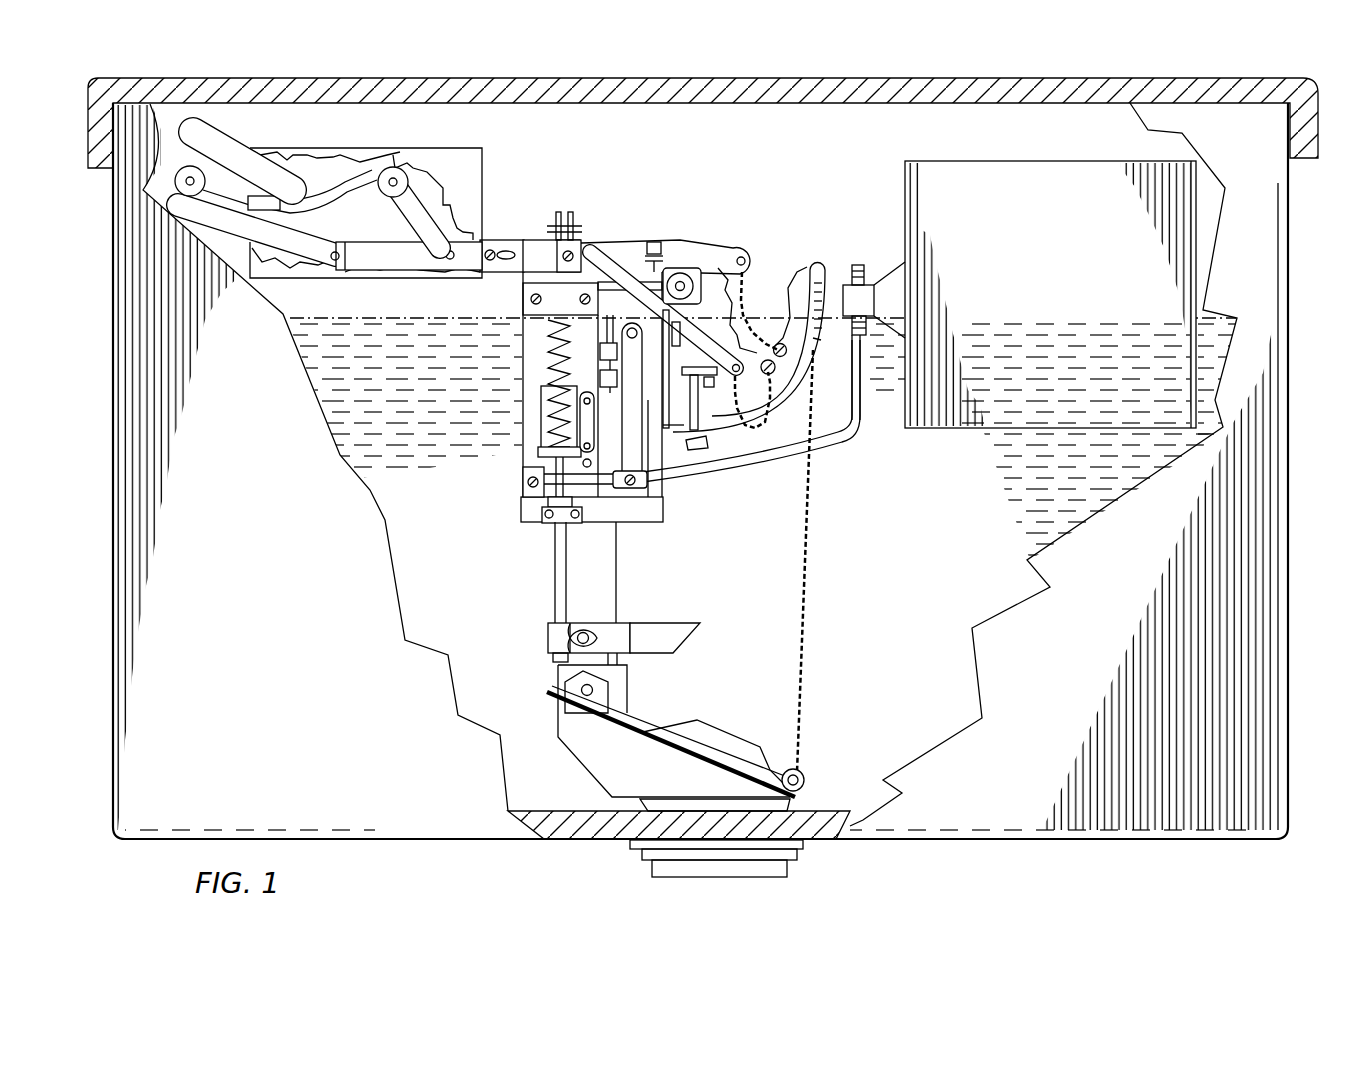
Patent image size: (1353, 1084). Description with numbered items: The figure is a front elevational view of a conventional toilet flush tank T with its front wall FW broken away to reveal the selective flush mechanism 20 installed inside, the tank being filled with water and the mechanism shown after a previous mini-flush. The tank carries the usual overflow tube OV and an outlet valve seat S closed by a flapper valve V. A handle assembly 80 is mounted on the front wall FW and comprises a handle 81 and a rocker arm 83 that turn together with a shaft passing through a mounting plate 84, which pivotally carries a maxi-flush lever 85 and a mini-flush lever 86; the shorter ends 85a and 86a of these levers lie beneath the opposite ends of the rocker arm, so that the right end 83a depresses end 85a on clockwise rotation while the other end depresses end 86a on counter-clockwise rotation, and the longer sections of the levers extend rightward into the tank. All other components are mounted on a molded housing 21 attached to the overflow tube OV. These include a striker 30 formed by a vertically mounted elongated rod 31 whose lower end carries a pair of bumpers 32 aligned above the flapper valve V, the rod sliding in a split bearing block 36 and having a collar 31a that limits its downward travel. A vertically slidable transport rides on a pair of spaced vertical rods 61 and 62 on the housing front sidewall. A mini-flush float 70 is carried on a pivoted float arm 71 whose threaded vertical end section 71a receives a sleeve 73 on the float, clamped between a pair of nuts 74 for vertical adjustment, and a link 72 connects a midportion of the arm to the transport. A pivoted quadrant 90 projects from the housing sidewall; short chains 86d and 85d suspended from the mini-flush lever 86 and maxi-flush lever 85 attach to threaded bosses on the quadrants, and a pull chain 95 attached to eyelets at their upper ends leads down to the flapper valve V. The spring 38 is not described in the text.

The toilet flush tank T is at (1291, 253).
The front wall FW is at (1043, 687).
The selective flush mechanism 20 is at (532, 236).
The housing 21 is at (665, 507).
The striker 30 is at (534, 436).
The elongated rod 31 is at (560, 566).
The collar 31a is at (540, 505).
The bumpers 32 is at (659, 630).
The split bearing block 36 is at (566, 518).
The spring 38 is at (548, 362).
The vertical rod 61 is at (606, 333).
The vertical rod 62 is at (664, 280).
The mini-flush float 70 is at (932, 206).
The float arm 71 is at (757, 462).
The end section 71a is at (856, 366).
The link 72 is at (636, 409).
The sleeve 73 is at (846, 331).
The nuts 74 is at (863, 283).
The handle assembly 80 is at (411, 144).
The handle 81 is at (232, 161).
The rocker arm 83 is at (327, 185).
The right end of rocker arm 83a is at (380, 174).
The mounting plate 84 is at (470, 165).
The maxi-flush lever 85 is at (603, 254).
The shorter end of maxi-flush lever 85a is at (398, 211).
The short chain 85d is at (720, 448).
The mini-flush lever 86 is at (637, 240).
The shorter end of mini-flush lever 86a is at (243, 227).
The short chain 86d is at (748, 300).
The quadrant 90 is at (806, 286).
The pull chain 95 is at (804, 598).
The overflow tube OV is at (607, 578).
The outlet valve seat S is at (592, 752).
The flapper valve V is at (720, 740).